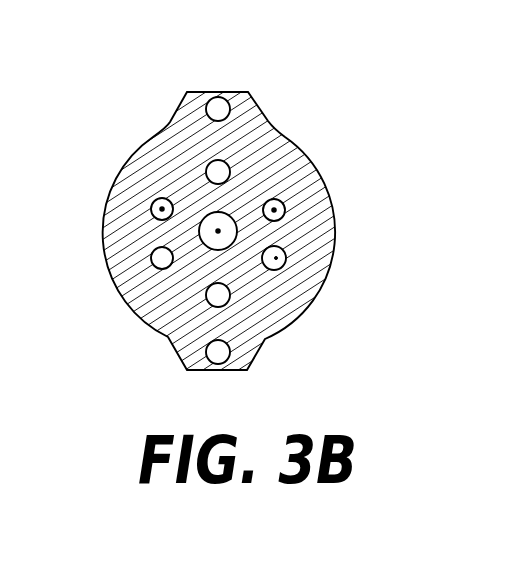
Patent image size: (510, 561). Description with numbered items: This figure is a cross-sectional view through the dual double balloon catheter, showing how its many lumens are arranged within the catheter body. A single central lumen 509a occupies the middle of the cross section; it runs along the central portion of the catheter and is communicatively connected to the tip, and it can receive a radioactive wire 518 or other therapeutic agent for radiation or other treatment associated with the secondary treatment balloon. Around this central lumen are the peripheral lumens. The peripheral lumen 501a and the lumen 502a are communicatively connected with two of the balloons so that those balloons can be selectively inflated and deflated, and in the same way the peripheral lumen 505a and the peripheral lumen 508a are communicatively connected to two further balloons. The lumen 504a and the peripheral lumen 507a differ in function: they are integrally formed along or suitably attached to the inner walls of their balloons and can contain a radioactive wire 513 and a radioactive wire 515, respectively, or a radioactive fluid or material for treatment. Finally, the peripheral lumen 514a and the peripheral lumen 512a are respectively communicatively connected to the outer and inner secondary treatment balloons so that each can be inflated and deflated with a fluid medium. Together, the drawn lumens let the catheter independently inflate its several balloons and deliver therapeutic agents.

The peripheral lumen 508a is at (218, 108).
The peripheral lumen 505a is at (218, 172).
The lumen 504a is at (152, 215).
The radioactive wire 513 is at (162, 209).
The central lumen 509a is at (218, 231).
The peripheral lumen 507a is at (284, 215).
The radioactive wire 515 is at (275, 208).
The lumen 502a is at (284, 264).
The radioactive wire 518 is at (278, 259).
The peripheral lumen 501a is at (158, 264).
The peripheral lumen 512a is at (230, 300).
The peripheral lumen 514a is at (229, 346).